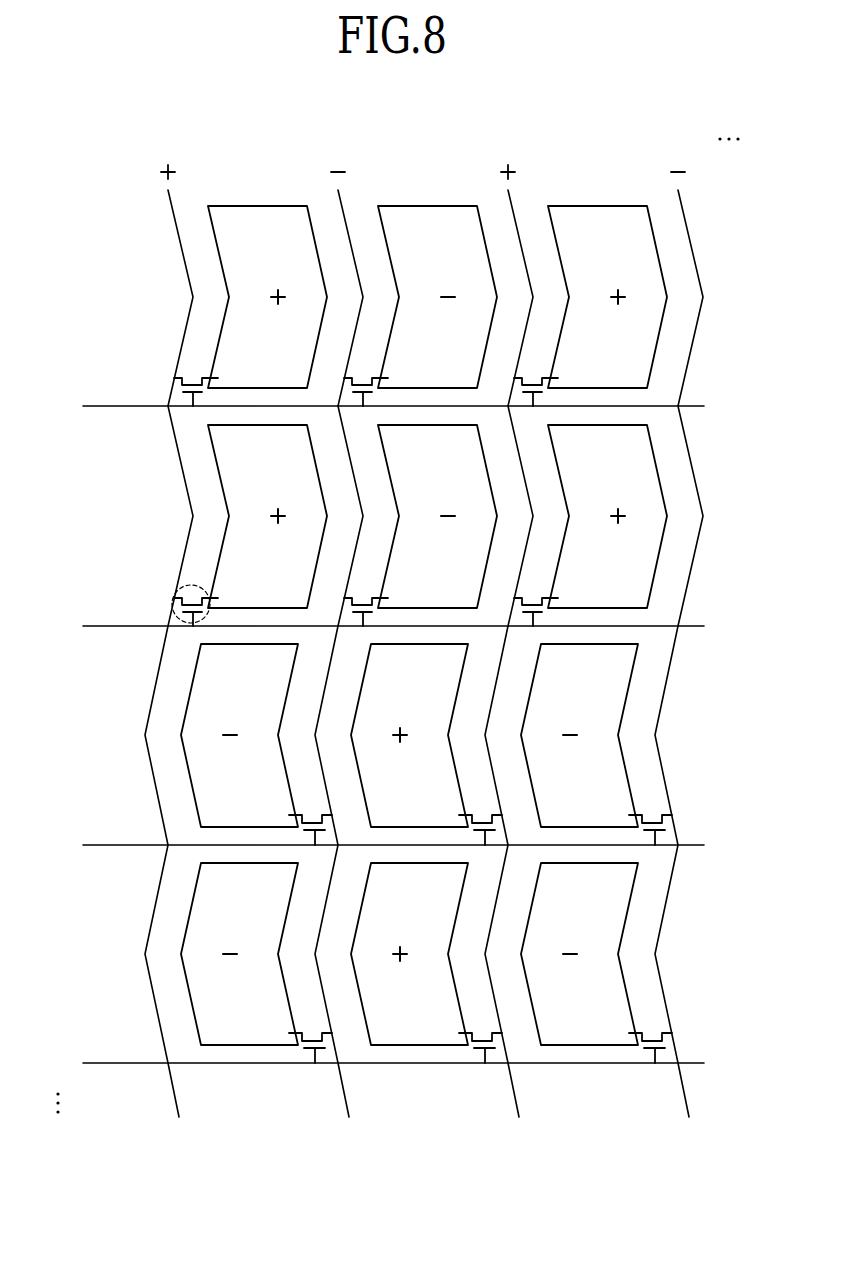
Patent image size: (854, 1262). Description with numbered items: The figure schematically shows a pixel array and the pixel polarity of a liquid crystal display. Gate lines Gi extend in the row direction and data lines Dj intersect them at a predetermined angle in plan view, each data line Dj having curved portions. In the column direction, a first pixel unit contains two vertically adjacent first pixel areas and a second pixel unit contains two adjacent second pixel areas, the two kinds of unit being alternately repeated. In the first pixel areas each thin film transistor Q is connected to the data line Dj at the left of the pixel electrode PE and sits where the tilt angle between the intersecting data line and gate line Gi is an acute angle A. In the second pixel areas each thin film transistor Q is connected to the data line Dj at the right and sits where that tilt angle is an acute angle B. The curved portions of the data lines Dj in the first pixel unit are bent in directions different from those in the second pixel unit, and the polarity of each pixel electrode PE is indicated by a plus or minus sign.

The data line Dj is at (169, 621).
The gate line Gi is at (380, 406).
The pixel electrode PE is at (242, 222).
The acute angle A is at (170, 407).
The acute angle B is at (332, 843).
The thin film transistor Q is at (190, 583).